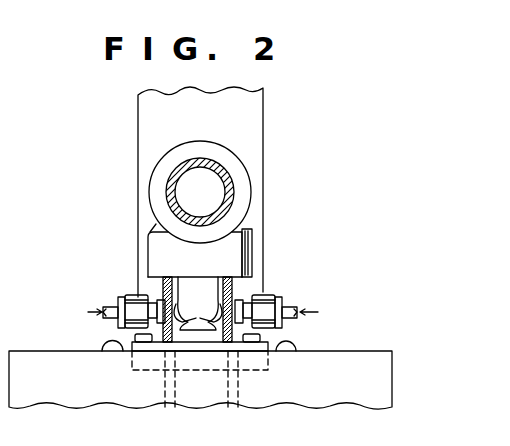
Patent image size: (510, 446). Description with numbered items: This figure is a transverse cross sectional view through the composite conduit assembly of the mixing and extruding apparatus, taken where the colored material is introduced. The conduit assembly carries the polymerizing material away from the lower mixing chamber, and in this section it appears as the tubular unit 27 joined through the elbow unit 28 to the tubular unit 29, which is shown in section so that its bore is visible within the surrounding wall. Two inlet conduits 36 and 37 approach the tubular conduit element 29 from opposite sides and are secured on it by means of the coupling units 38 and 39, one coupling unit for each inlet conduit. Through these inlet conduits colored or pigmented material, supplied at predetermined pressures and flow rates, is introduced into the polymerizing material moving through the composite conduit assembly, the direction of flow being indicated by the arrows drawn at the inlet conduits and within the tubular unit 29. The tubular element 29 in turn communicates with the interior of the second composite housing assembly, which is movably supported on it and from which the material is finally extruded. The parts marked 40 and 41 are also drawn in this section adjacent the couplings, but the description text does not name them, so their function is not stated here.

The tubular unit 27 is at (233, 200).
The elbow unit 28 is at (238, 163).
The tubular unit 29 is at (238, 283).
The inlet conduit 36 is at (110, 303).
The inlet conduit 37 is at (300, 305).
The coupling unit 38 is at (126, 288).
The coupling unit 39 is at (290, 296).
The clamp member 40 is at (204, 294).
The shim plate 41 is at (222, 282).